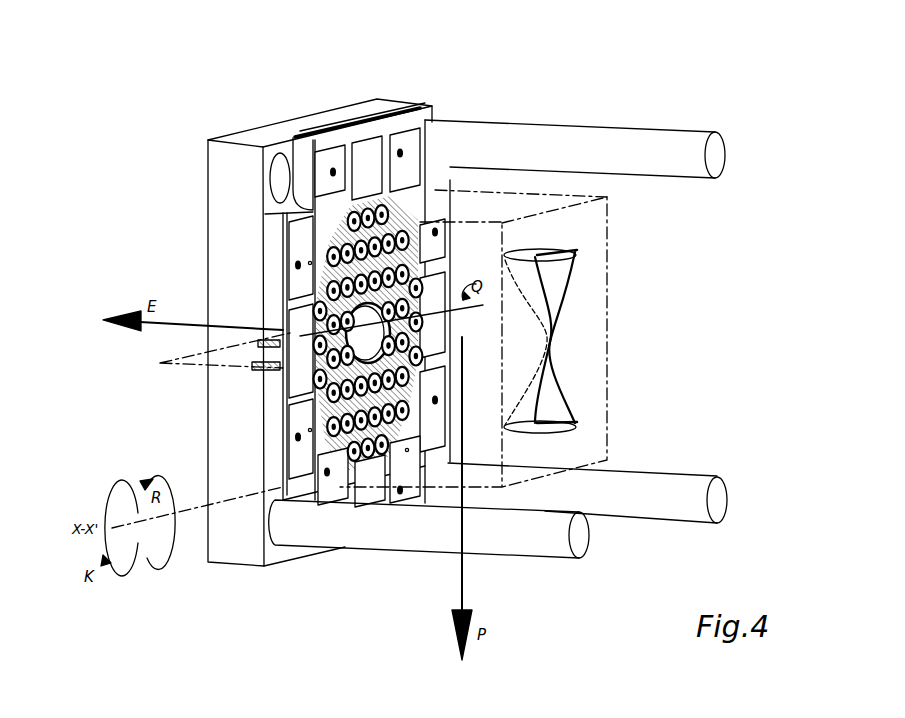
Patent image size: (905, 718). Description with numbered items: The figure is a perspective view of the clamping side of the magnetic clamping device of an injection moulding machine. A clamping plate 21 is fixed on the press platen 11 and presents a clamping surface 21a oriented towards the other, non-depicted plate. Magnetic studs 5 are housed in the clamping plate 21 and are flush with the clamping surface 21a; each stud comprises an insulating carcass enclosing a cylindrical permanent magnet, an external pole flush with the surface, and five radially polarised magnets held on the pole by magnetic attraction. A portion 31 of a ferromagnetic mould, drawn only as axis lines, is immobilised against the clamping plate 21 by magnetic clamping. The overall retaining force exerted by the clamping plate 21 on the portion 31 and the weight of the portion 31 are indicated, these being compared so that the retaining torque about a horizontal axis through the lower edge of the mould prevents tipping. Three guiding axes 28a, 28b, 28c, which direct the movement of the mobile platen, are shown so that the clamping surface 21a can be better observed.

The press platen 11 is at (293, 128).
The clamping plate 21 is at (382, 117).
The clamping surface 21a is at (410, 163).
The magnetic studs 5 is at (322, 291).
The portion of a mould 31 is at (499, 202).
The guiding axis 28a is at (580, 535).
The guiding axis 28b is at (717, 500).
The guiding axis 28c is at (640, 150).